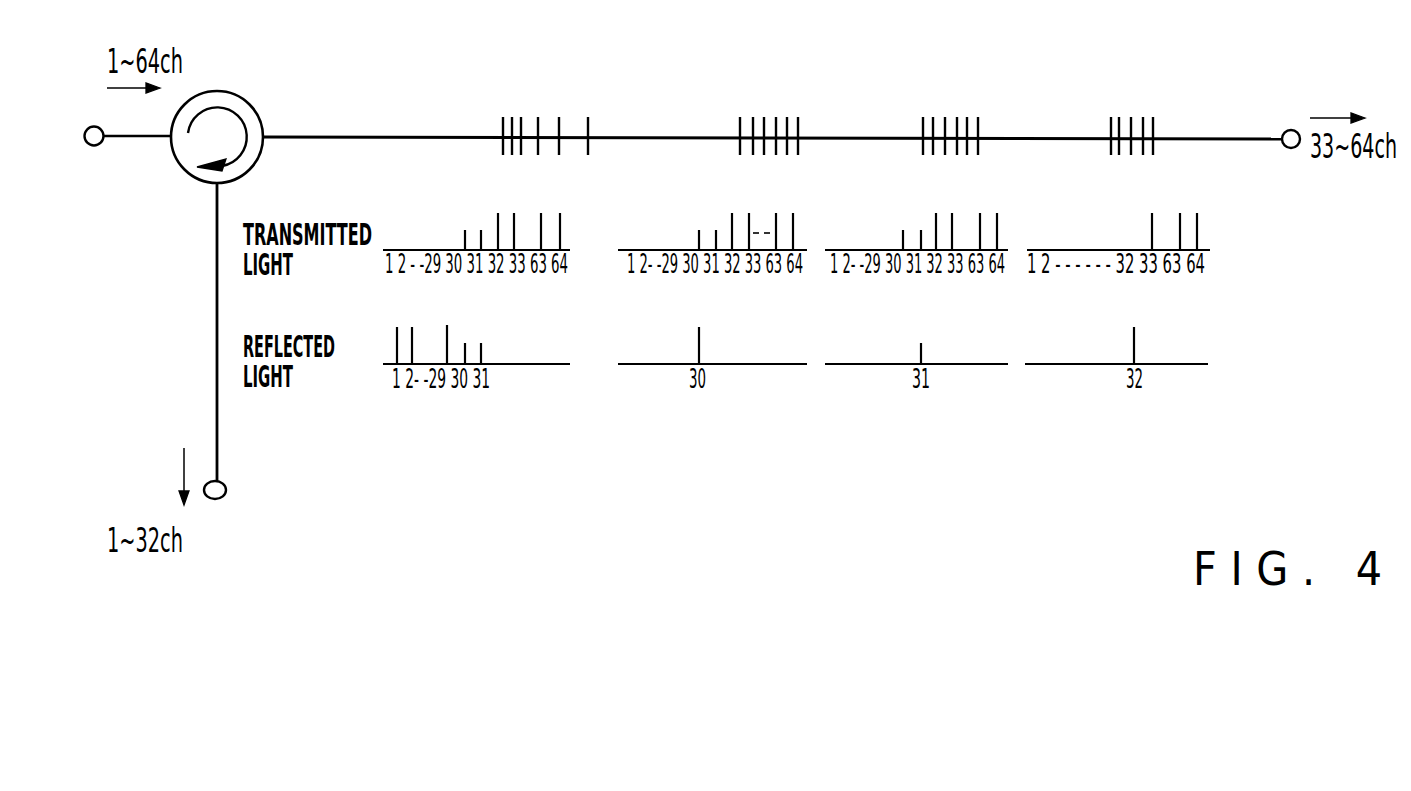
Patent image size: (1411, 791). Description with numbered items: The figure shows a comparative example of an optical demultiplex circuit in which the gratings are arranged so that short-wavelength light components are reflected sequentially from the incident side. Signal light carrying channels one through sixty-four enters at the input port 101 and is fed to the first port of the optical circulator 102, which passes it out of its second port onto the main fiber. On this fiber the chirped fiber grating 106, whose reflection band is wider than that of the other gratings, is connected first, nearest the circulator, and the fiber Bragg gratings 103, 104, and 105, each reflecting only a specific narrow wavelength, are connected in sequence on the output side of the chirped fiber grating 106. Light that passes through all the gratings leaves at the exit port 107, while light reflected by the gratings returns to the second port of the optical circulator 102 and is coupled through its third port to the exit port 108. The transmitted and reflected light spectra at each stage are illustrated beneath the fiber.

The input port 101 is at (93, 146).
The optical circulator 102 is at (248, 100).
The fiber Bragg grating 103 is at (770, 110).
The fiber Bragg grating 104 is at (960, 110).
The fiber Bragg grating 105 is at (1130, 110).
The chirped fiber grating 106 is at (540, 110).
The exit port 107 is at (1290, 130).
The exit port 108 is at (226, 490).